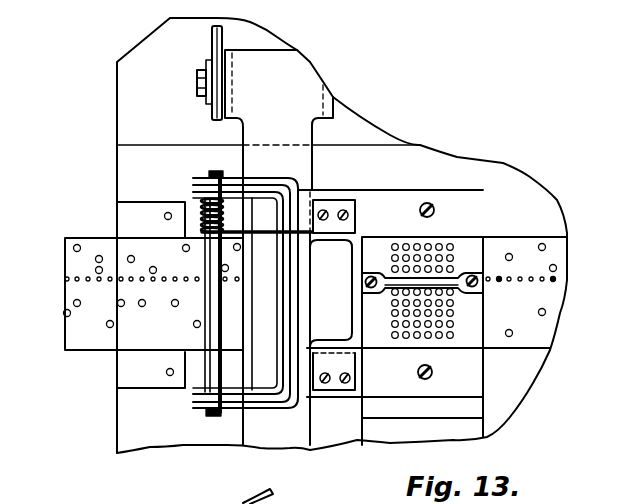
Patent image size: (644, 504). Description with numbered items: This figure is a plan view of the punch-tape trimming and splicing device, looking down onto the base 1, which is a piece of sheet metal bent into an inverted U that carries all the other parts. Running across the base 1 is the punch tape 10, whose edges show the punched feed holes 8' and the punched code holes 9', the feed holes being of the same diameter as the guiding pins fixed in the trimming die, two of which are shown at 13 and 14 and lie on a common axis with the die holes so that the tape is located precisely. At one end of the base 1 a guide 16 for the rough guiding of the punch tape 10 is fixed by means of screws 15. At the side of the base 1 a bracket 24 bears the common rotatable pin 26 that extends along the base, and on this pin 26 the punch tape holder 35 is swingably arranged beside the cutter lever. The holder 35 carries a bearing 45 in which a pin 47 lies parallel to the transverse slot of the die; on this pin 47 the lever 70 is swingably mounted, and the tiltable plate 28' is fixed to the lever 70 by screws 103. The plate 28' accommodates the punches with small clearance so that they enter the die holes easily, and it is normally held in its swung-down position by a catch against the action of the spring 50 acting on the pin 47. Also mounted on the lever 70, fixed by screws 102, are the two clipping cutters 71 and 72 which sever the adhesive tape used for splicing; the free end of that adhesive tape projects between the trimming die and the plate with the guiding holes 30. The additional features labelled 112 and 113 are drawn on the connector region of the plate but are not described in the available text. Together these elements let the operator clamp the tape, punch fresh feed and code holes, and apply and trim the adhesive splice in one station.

The base 1 is at (117, 85).
The bracket 24 is at (212, 42).
The common rotatable pin 26 is at (197, 86).
The punch tape holder 35 is at (302, 68).
The lever 70 is at (264, 178).
The bearing 45 is at (193, 397).
The spring 50 is at (268, 233).
The pin 47 is at (216, 413).
The code holes 9' is at (139, 294).
The feed holes 8' is at (137, 283).
The punch tape 10 is at (67, 331).
The screws 15 is at (168, 212).
The guide 16 is at (117, 364).
The clipping cutter 71 is at (353, 228).
The clipping cutter 72 is at (356, 362).
The screws 102 is at (351, 212).
The screws 103 is at (434, 210).
The guiding holes 30 is at (448, 242).
The connector bar 113 is at (387, 273).
The connector bar edge 112 is at (372, 293).
The tiltable plate 28' is at (520, 277).
The guiding pin 14 is at (556, 279).
The guiding pin 13 is at (499, 283).